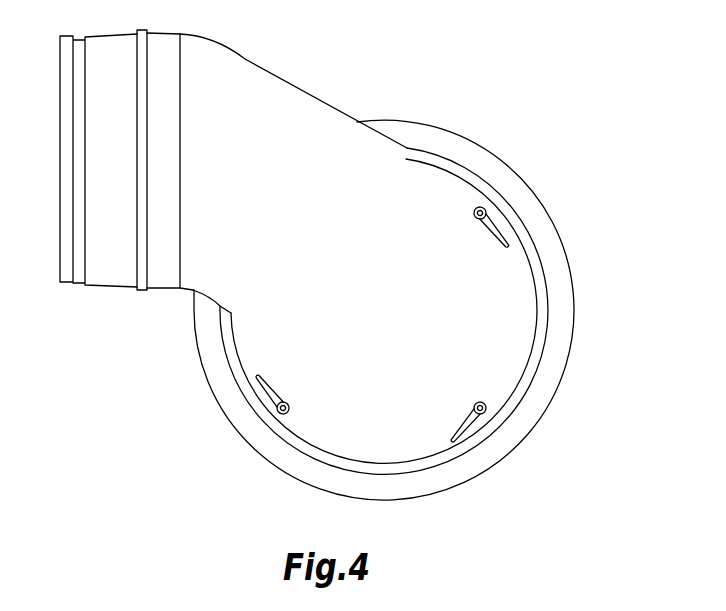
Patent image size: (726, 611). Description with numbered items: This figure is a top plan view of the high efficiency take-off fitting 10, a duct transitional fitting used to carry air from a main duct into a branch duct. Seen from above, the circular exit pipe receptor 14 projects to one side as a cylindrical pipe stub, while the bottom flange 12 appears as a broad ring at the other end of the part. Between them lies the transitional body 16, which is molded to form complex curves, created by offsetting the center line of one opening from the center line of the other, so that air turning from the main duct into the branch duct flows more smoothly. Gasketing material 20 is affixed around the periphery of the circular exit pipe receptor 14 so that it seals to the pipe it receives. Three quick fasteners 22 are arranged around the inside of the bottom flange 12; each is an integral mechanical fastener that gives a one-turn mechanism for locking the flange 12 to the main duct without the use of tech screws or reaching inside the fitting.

The high efficiency take-off fitting 10 is at (547, 100).
The bottom flange 12 is at (290, 462).
The circular exit pipe receptor 14 is at (112, 267).
The transitional body 16 is at (386, 312).
The gasketing material 20 is at (143, 237).
The quick fastener 22 is at (492, 223).